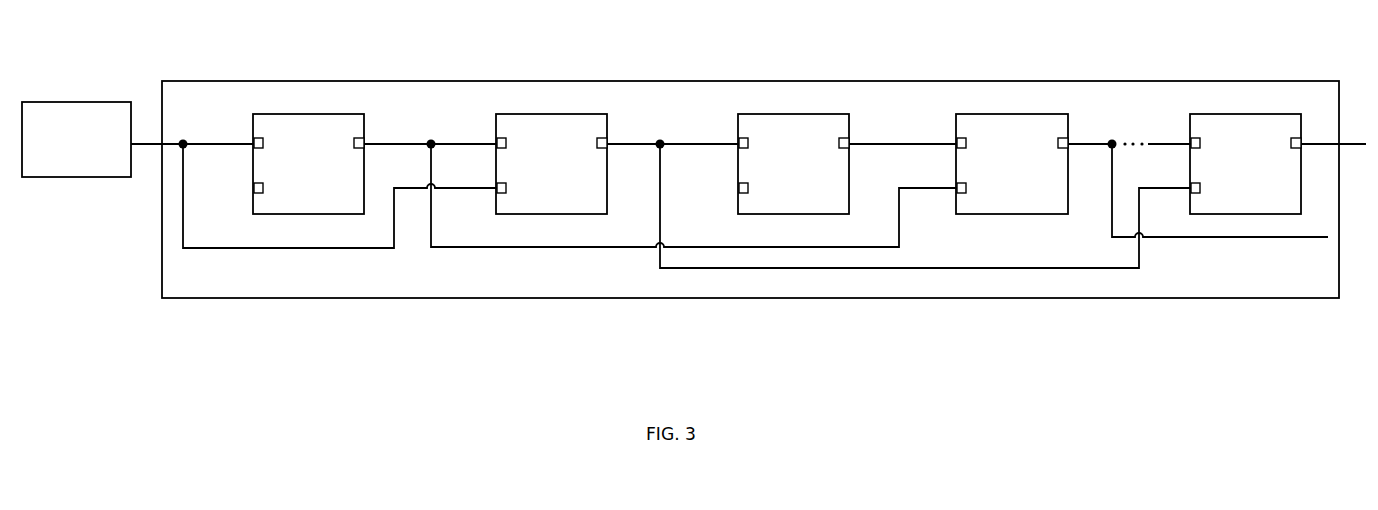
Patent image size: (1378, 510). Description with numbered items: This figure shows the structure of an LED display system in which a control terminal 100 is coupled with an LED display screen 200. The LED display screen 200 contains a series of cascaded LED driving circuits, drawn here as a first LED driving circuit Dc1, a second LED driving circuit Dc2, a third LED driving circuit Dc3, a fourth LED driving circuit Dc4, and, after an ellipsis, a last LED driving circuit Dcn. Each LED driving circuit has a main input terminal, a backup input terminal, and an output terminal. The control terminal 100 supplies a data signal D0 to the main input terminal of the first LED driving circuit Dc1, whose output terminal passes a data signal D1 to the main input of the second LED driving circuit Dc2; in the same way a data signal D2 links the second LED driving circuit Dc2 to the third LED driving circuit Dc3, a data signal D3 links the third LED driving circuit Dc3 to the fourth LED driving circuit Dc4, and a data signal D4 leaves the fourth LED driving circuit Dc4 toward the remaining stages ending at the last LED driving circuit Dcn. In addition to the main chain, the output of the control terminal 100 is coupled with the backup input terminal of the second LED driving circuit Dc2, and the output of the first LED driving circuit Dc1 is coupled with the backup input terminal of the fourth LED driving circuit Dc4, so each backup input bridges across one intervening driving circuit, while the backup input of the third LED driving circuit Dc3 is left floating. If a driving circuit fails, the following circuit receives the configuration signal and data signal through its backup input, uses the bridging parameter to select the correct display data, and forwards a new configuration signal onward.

The control terminal 100 is at (78, 101).
The LED display screen 200 is at (849, 89).
The first LED driving circuit Dc1 is at (308, 164).
The second LED driving circuit Dc2 is at (551, 164).
The third LED driving circuit Dc3 is at (793, 164).
The fourth LED driving circuit Dc4 is at (1012, 164).
The n-th LED driving circuit Dcn is at (1245, 164).
The first data signal D0 is at (192, 134).
The second data signal D1 is at (430, 133).
The third data signal D2 is at (673, 133).
The fourth data signal D3 is at (903, 129).
The fifth data signal D4 is at (1129, 131).